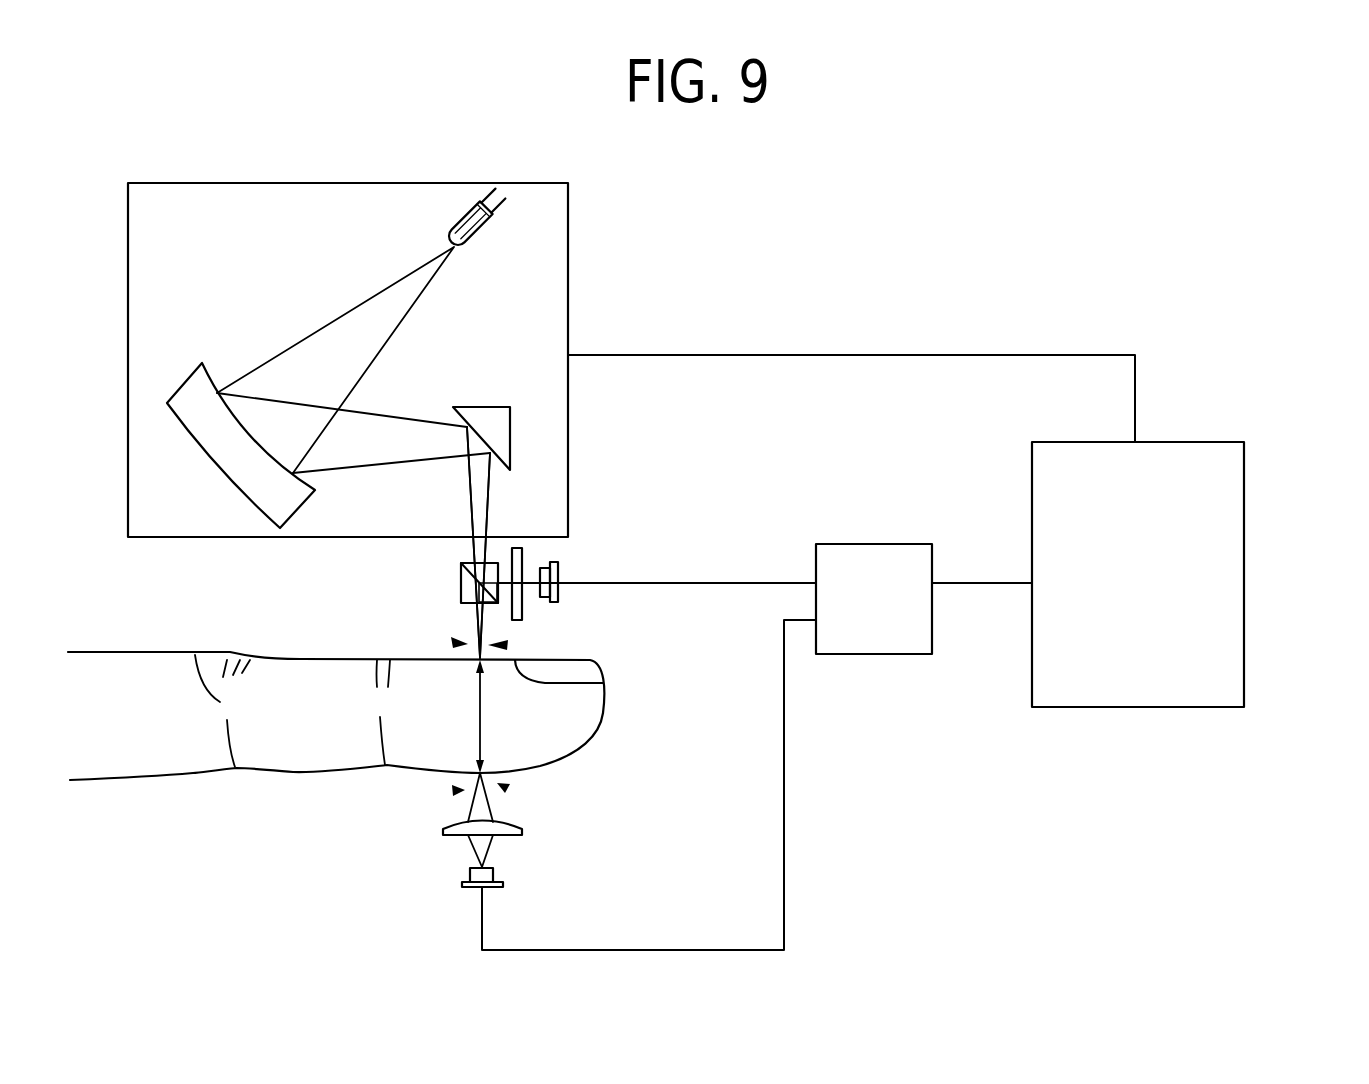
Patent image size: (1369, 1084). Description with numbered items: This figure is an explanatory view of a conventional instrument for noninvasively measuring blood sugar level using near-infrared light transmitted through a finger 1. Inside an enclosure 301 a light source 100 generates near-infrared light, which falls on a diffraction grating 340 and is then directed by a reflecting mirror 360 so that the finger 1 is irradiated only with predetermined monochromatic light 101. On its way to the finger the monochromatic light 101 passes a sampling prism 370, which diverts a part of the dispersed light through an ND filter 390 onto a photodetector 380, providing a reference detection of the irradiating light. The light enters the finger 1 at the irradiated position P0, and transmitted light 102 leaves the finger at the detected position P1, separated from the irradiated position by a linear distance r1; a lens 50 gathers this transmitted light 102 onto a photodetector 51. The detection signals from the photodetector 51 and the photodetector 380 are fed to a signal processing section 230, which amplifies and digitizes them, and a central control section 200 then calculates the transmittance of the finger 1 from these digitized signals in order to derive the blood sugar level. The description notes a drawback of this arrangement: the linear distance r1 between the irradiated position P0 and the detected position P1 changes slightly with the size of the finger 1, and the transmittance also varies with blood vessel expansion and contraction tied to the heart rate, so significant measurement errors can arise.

The finger 1 is at (122, 667).
The light source unit 301 is at (257, 183).
The light source 100 is at (462, 200).
The diffraction grating 340 is at (200, 425).
The reflecting mirror 360 is at (490, 403).
The sampling prism 370 is at (458, 586).
The photodetector 380 is at (565, 570).
The ND filter 390 is at (522, 605).
The monochromatic light 101 is at (497, 645).
The irradiated position P0 is at (451, 641).
The linear distance r1 is at (463, 716).
The transmitted light 102 is at (453, 792).
The detected position P1 is at (505, 786).
The lens 50 is at (453, 837).
The photodetector 51 is at (497, 873).
The signal processing section 230 is at (869, 544).
The central control section 200 is at (1246, 513).